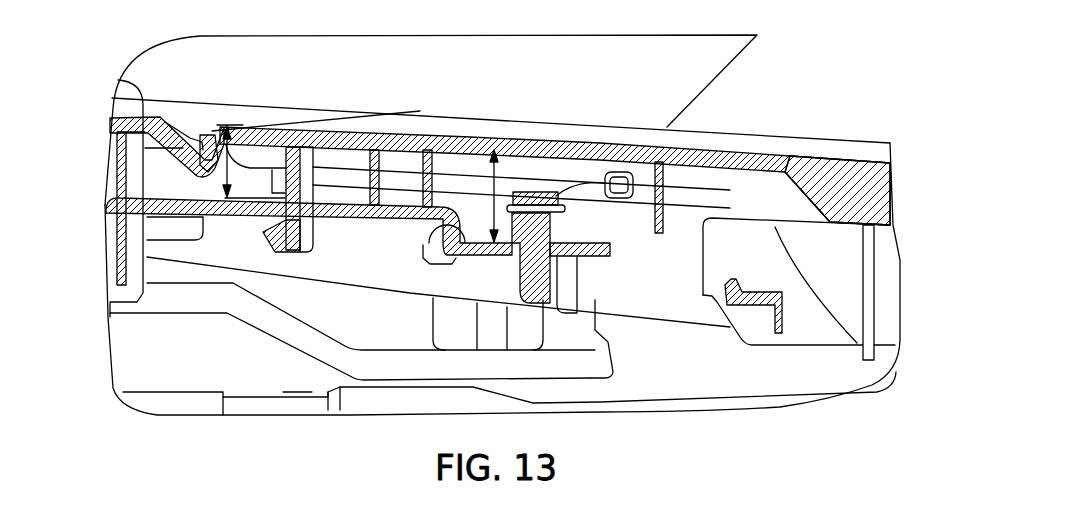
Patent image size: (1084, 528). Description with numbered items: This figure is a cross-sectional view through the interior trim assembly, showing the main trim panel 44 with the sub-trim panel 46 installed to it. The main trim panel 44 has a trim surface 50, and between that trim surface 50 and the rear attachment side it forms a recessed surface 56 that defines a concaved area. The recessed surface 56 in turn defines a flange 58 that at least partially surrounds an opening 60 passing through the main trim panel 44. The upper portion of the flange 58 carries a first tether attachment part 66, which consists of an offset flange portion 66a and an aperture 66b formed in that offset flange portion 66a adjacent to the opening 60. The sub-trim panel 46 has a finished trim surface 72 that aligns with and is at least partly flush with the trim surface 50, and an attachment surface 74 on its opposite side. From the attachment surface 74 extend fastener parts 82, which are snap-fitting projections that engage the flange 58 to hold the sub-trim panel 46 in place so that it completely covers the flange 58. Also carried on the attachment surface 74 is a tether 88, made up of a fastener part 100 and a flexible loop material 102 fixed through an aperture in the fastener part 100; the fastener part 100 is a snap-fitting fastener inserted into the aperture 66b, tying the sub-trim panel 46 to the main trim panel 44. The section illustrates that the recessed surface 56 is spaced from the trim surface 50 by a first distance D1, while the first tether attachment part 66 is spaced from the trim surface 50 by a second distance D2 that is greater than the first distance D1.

The trim surface 50 is at (118, 80).
The main trim panel 44 is at (166, 126).
The first distance D1 is at (232, 158).
The second distance D2 is at (467, 203).
The recessed surface 56 is at (410, 205).
The flange 58 is at (508, 199).
The sub-trim panel 46 is at (750, 152).
The finished trim surface 72 is at (820, 150).
The fastener parts 82 is at (283, 237).
The offset flange portion 66a is at (423, 248).
The aperture 66b is at (545, 240).
The first tether attachment part 66 is at (595, 258).
The opening 60 is at (608, 257).
The tether 88 is at (528, 188).
The fastener part 100 is at (530, 270).
The flexible loop material 102 is at (604, 182).
The attachment surface 74 is at (688, 178).